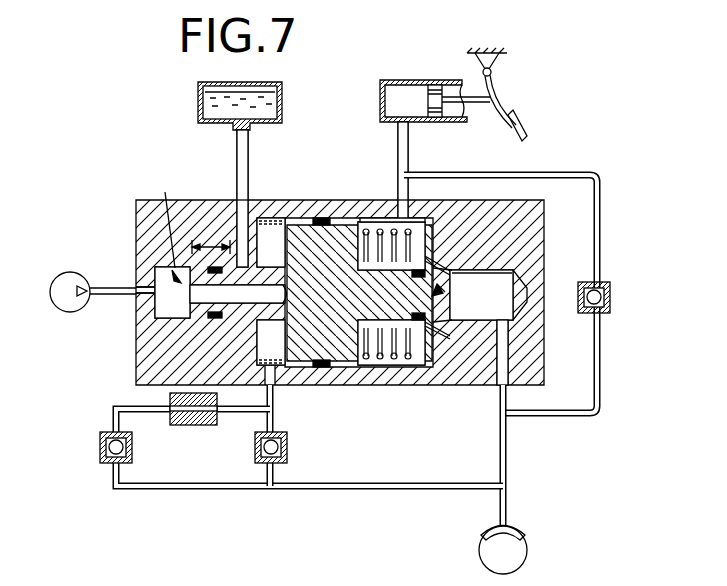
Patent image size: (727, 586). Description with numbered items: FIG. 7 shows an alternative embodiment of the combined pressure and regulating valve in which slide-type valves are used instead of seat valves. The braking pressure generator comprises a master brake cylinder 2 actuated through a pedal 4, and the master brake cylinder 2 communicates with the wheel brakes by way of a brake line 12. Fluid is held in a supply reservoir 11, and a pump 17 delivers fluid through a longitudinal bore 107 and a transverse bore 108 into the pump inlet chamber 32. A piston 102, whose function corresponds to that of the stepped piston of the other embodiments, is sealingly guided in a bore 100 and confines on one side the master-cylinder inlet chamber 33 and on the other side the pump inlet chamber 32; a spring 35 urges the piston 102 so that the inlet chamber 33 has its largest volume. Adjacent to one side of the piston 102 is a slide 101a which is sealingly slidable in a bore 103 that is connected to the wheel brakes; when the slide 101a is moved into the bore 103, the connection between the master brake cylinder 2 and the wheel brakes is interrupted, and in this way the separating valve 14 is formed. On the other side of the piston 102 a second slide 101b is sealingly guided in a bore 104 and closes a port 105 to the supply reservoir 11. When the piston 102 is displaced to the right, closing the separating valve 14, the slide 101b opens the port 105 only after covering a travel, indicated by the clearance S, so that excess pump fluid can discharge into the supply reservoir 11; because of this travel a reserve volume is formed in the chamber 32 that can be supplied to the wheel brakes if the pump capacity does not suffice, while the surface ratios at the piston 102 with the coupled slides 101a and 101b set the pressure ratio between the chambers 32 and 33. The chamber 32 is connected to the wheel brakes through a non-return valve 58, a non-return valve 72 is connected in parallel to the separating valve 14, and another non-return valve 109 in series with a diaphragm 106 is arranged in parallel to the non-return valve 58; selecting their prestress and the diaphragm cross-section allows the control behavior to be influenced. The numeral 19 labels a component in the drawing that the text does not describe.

The master brake cylinder 2 is at (446, 122).
The pedal 4 is at (500, 124).
The supply reservoir 11 is at (283, 106).
The brake line 12 is at (490, 386).
The separating valve 14 is at (496, 280).
The pump 17 is at (62, 275).
The piston 19 is at (164, 227).
The pump inlet chamber 32 is at (270, 232).
The master-cylinder inlet chamber 33 is at (398, 216).
The spring 35 is at (378, 228).
The non-return valve 58 is at (287, 447).
The non-return valve 72 is at (611, 303).
The bore 100 is at (398, 378).
The slide 101a is at (440, 283).
The second slide 101b is at (238, 312).
The piston 102 is at (362, 232).
The bore 103 is at (504, 256).
The bore 104 is at (143, 315).
The port 105 is at (238, 217).
The diaphragm 106 is at (170, 396).
The longitudinal bore 107 is at (305, 240).
The transverse bore 108 is at (290, 265).
The non-return valve 109 is at (100, 440).
The clearance S is at (208, 242).